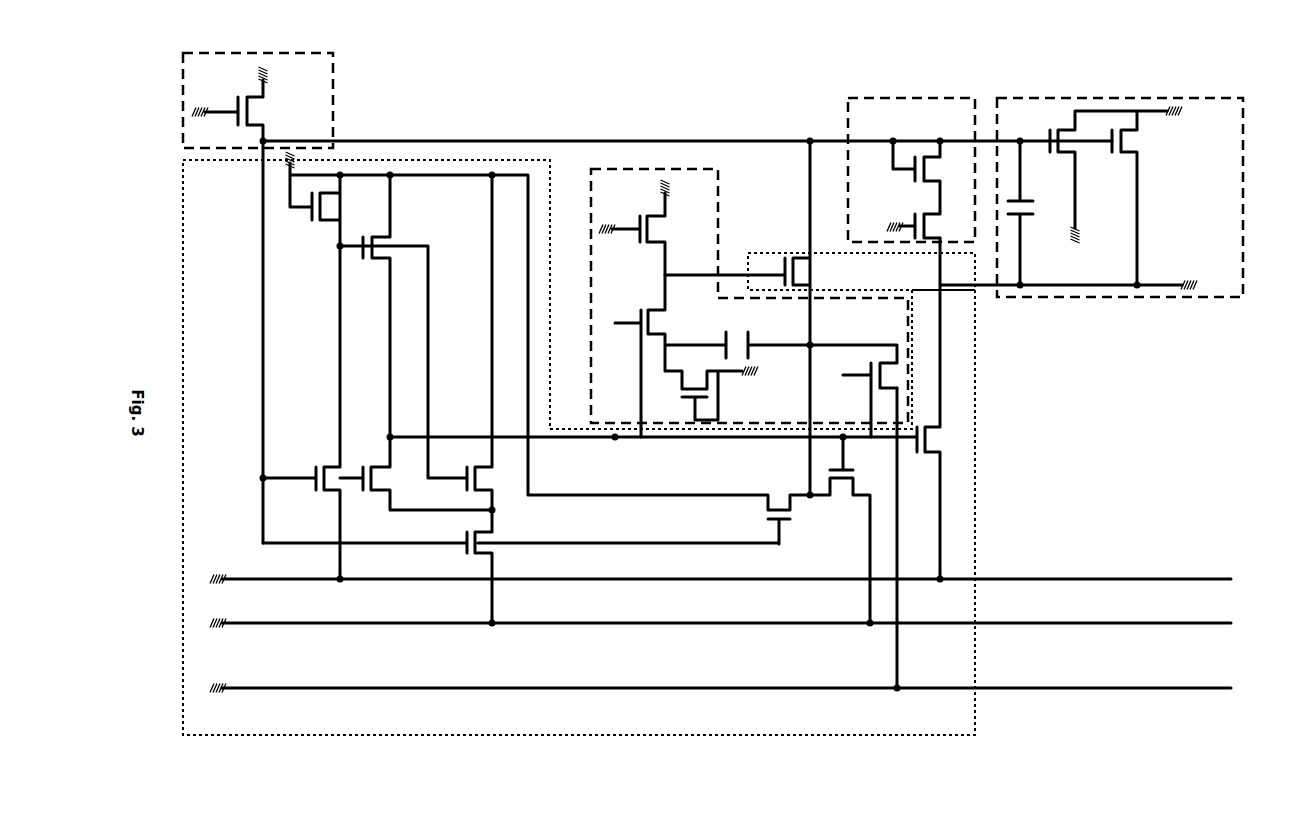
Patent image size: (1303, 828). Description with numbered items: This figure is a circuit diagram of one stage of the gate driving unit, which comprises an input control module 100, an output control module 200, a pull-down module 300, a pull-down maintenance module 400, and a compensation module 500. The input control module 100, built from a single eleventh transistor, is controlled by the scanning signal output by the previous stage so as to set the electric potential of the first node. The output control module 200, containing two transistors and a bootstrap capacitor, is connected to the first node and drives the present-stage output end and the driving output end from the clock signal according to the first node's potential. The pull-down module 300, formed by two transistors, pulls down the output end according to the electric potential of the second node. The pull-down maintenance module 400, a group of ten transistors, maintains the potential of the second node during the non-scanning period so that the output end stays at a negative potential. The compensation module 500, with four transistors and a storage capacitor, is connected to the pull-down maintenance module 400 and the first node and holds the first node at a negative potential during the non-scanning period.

The input control module 100 is at (300, 53).
The output control module 200 is at (1243, 125).
The pull-down module 300 is at (868, 98).
The pull-down maintenance module 400 is at (975, 507).
The compensation module 500 is at (598, 170).